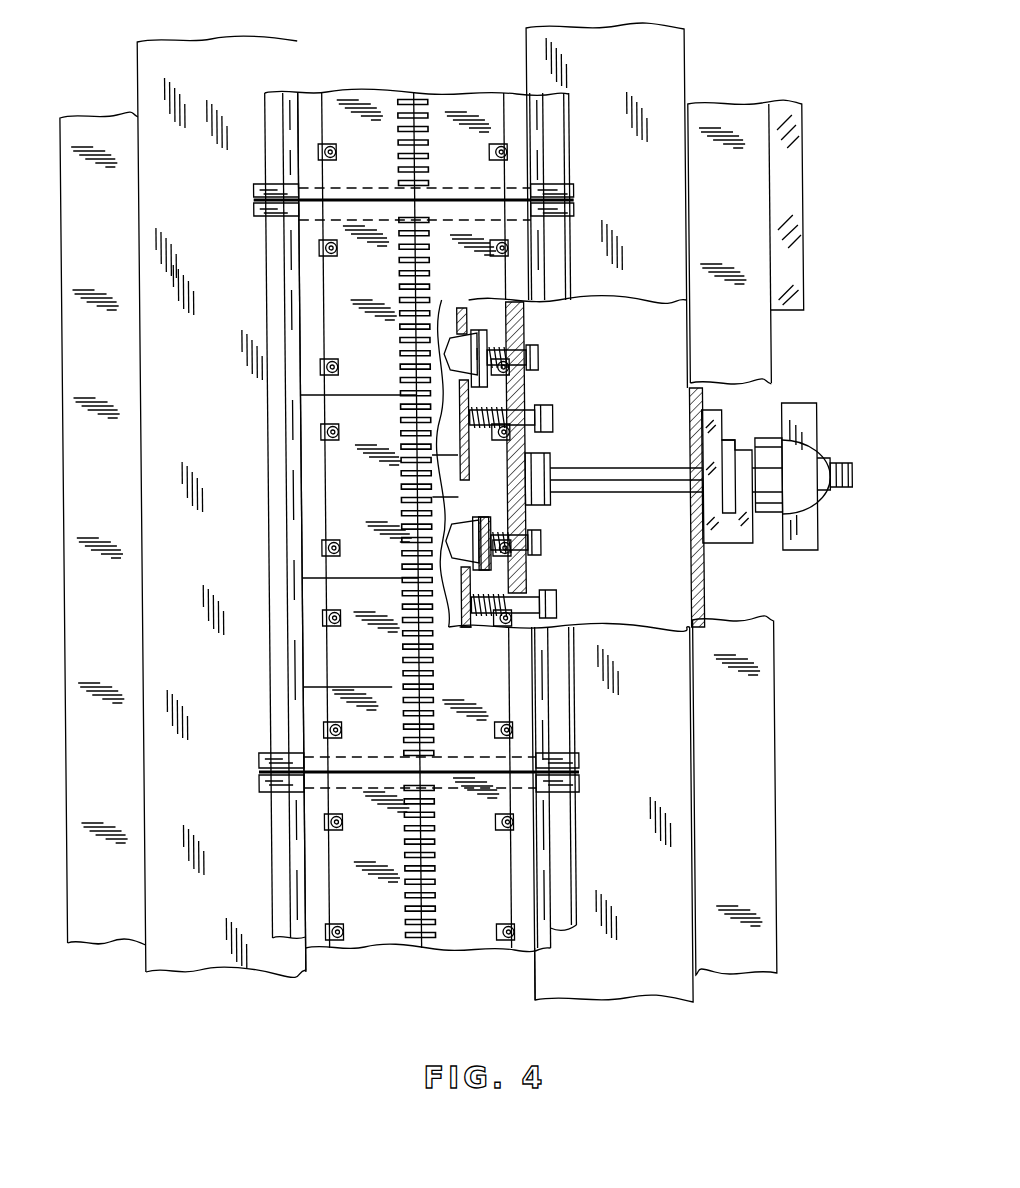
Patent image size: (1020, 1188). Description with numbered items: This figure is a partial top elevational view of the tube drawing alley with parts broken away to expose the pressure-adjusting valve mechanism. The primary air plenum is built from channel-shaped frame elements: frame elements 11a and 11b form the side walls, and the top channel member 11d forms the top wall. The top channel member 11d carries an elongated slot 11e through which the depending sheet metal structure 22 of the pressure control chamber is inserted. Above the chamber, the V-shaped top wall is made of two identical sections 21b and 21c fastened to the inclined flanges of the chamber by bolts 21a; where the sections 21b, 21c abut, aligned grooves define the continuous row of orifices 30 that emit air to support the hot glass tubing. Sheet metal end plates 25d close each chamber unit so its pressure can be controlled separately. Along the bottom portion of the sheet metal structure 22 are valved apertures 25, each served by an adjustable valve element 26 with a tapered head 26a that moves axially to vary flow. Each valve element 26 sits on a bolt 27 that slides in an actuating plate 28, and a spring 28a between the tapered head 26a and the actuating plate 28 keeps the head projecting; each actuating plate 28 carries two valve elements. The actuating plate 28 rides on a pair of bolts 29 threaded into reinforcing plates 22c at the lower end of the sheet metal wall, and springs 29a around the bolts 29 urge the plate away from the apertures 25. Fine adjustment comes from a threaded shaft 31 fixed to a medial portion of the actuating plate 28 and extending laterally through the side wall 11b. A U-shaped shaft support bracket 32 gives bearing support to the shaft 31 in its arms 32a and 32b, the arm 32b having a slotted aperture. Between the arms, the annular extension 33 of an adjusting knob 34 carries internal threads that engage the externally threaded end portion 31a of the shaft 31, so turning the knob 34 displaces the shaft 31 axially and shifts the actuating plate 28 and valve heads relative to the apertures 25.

The frame element 11a is at (110, 622).
The frame element 11b is at (704, 622).
The top channel member 11d is at (604, 855).
The elongated slot 11e is at (536, 990).
The bolts 21a is at (494, 146).
The top wall section 21b is at (347, 218).
The top wall section 21c is at (441, 212).
The depending sheet metal structure 22 is at (422, 466).
The reinforcing plates 22c is at (471, 630).
The valved apertures 25 is at (446, 348).
The sheet metal end plates 25d is at (577, 208).
The adjustable valve element 26 is at (468, 330).
The tapered head 26a is at (448, 378).
The bolt 27 is at (540, 356).
The actuating plate 28 is at (520, 576).
The spring 28a is at (489, 332).
The bolts 29 is at (555, 419).
The springs 29a is at (489, 400).
The orifices 30 is at (432, 273).
The threaded shaft 31 is at (607, 470).
The externally threaded end portion 31a is at (845, 462).
The shaft support bracket 32 is at (731, 440).
The bracket arm 32a is at (715, 405).
The bracket arm 32b is at (763, 515).
The annular extension 33 is at (760, 437).
The adjusting knob 34 is at (814, 552).